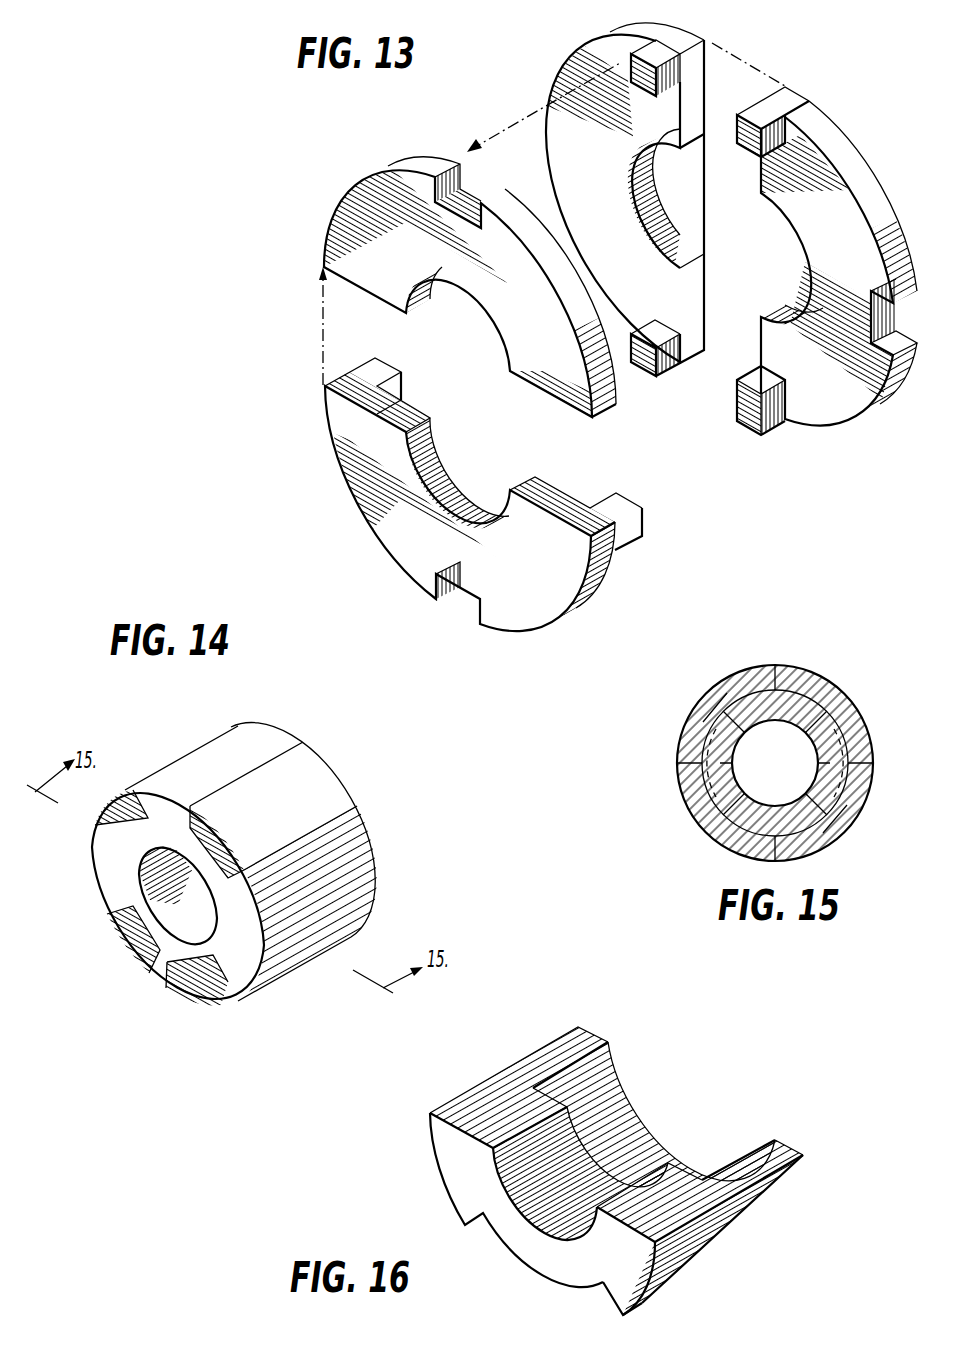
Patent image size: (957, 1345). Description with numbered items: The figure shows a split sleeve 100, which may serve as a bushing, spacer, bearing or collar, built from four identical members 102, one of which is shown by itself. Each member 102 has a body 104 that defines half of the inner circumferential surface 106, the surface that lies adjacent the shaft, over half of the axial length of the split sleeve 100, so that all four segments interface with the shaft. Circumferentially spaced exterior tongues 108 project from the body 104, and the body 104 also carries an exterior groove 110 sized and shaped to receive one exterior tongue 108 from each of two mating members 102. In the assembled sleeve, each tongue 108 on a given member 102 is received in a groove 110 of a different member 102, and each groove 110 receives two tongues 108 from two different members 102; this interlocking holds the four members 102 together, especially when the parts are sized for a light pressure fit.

In FIG. 14, the split sleeve 100 is at (357, 779).
In FIG. 16, the member 102 is at (646, 1151).
In FIG. 16, the body 104 is at (492, 1232).
In FIG. 16, the inner circumferential surface 106 is at (577, 1215).
In FIG. 16, the exterior tongue 108 is at (598, 1036).
In FIG. 16, the exterior groove 110 is at (605, 1287).